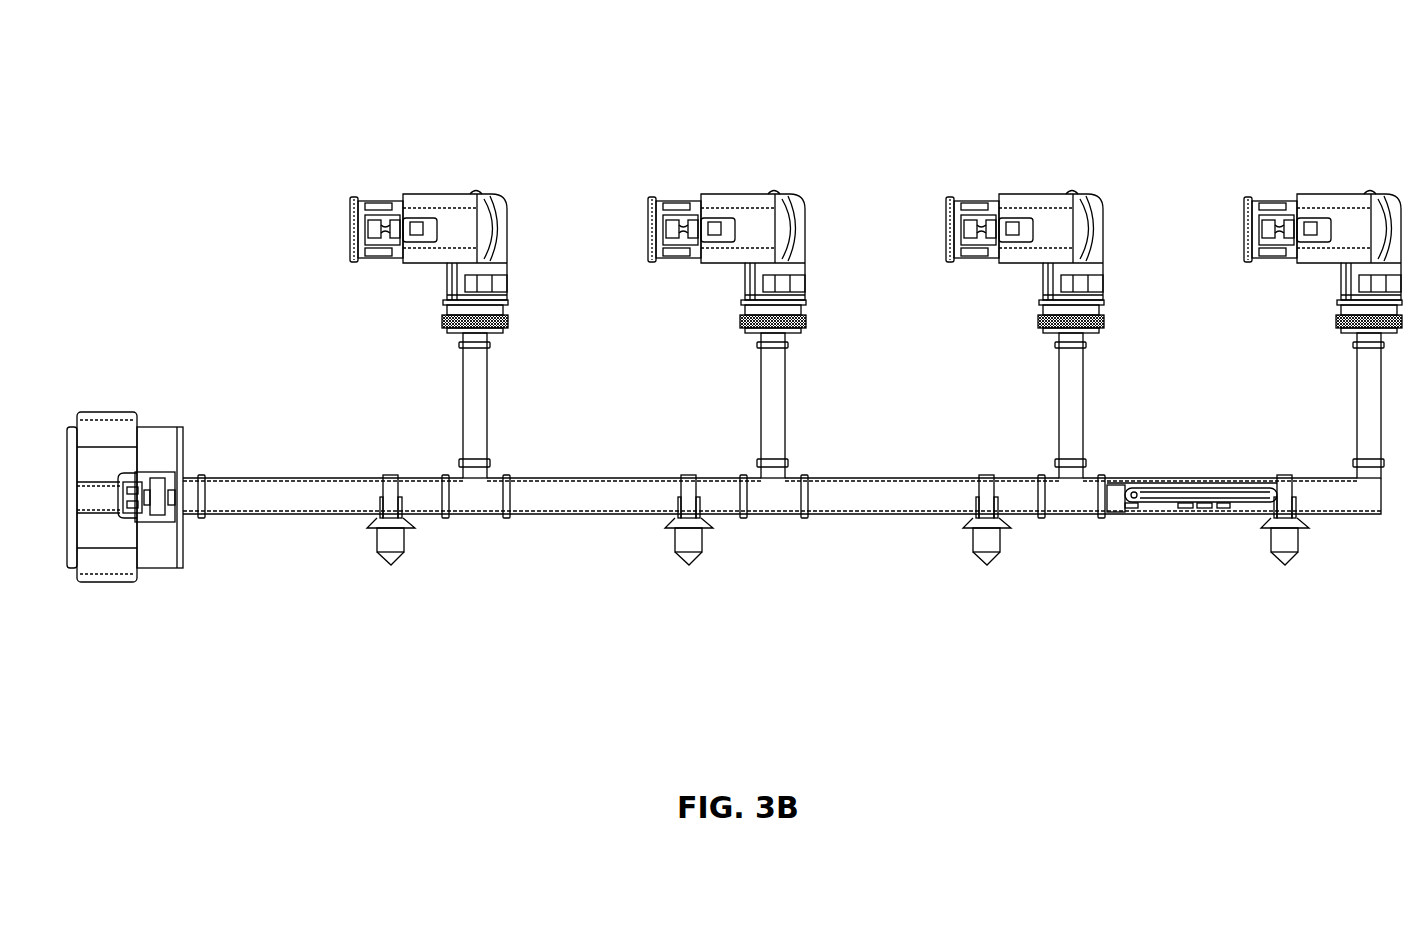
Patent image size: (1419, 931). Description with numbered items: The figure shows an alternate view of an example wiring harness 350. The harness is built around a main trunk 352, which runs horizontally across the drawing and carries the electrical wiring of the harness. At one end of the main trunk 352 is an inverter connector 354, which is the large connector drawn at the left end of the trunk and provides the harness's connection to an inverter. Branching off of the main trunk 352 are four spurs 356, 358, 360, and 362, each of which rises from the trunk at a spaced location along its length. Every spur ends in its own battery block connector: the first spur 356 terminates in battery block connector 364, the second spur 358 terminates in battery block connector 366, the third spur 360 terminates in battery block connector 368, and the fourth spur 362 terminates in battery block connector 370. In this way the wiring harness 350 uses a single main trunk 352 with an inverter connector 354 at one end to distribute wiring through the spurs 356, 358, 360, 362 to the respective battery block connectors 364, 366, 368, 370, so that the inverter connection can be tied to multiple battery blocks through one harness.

The wiring harness 350 is at (183, 88).
The main trunk 352 is at (1400, 598).
The inverter connector 354 is at (113, 410).
The spur 356 is at (472, 302).
The spur 358 is at (770, 302).
The spur 360 is at (1068, 302).
The spur 362 is at (1254, 319).
The battery block connector 364 is at (429, 230).
The battery block connector 366 is at (727, 230).
The battery block connector 368 is at (1025, 230).
The battery block connector 370 is at (1323, 230).